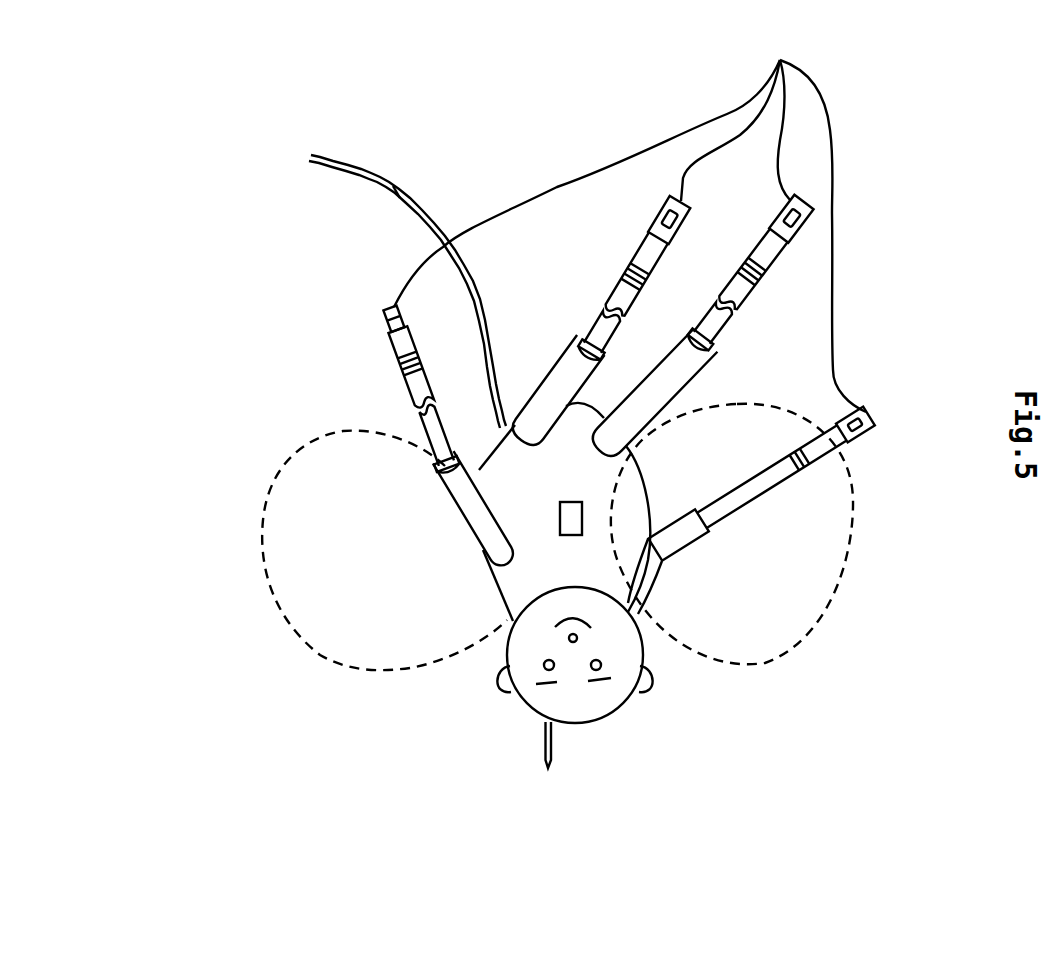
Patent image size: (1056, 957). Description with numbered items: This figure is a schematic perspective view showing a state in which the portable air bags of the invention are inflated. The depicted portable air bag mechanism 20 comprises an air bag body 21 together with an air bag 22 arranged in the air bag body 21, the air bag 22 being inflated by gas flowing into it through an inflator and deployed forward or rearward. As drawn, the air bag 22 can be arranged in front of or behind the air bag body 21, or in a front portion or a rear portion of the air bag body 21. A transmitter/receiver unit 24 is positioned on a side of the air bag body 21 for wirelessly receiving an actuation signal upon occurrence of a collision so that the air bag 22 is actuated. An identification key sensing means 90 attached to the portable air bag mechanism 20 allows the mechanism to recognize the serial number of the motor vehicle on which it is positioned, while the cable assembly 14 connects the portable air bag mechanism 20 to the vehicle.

The cable and plug assembly 14 is at (627, 318).
The portable air bag mechanism 20 is at (673, 742).
The air bag body 21 is at (567, 467).
The air bag 22 is at (267, 590).
The transmitter/receiver unit 24 is at (548, 770).
The identification key sensing means 90 is at (572, 516).